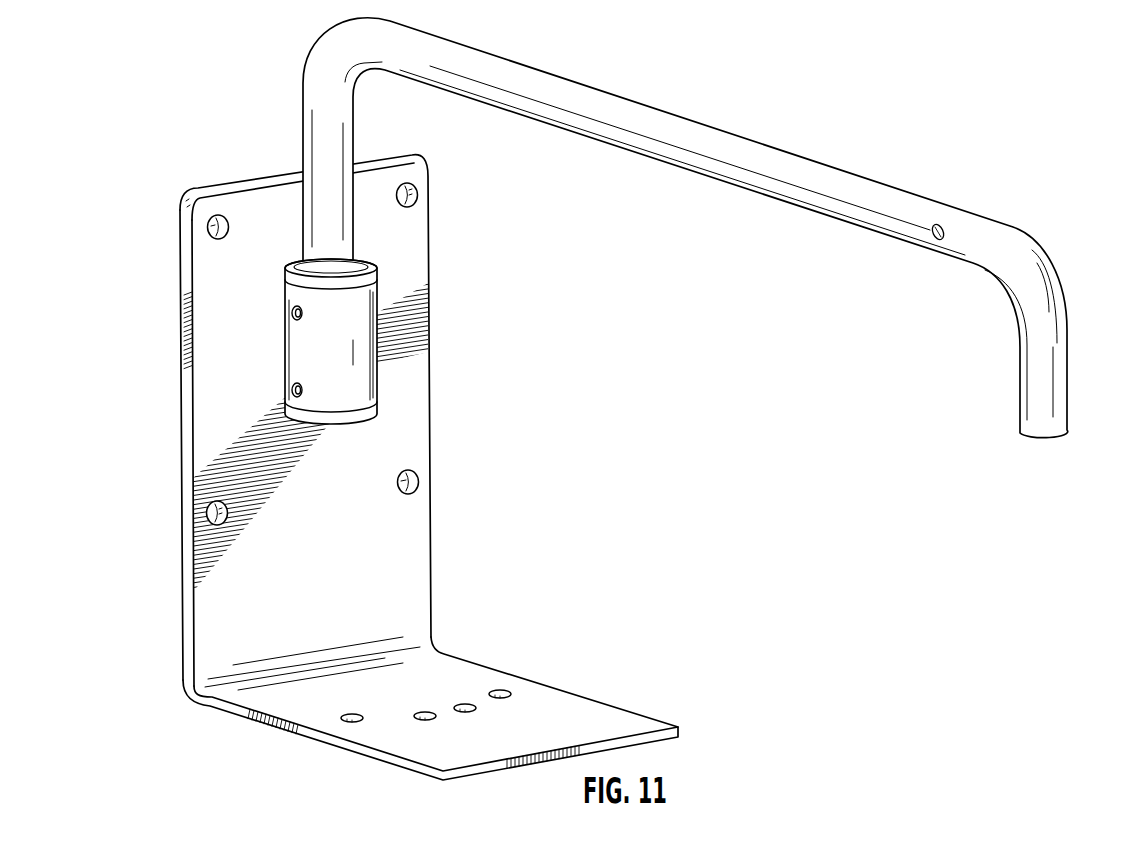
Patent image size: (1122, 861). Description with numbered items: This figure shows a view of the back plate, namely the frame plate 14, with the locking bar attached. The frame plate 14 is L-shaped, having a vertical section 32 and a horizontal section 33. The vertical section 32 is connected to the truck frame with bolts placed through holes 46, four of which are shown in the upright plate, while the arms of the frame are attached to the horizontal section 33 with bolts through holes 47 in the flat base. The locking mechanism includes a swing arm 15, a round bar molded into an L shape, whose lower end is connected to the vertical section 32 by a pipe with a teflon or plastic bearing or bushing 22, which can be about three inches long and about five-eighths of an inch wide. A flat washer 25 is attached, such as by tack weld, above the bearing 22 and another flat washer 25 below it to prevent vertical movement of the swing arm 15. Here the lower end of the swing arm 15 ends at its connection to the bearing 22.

The frame plate 14 is at (385, 467).
The swing arm 15 is at (788, 163).
The pipe with teflon or plastic bearing 22 is at (395, 343).
The flat washer 25 is at (352, 287).
The vertical section 32 is at (377, 571).
The horizontal section 33 is at (587, 716).
The holes 46 is at (208, 514).
The holes 47 is at (467, 705).